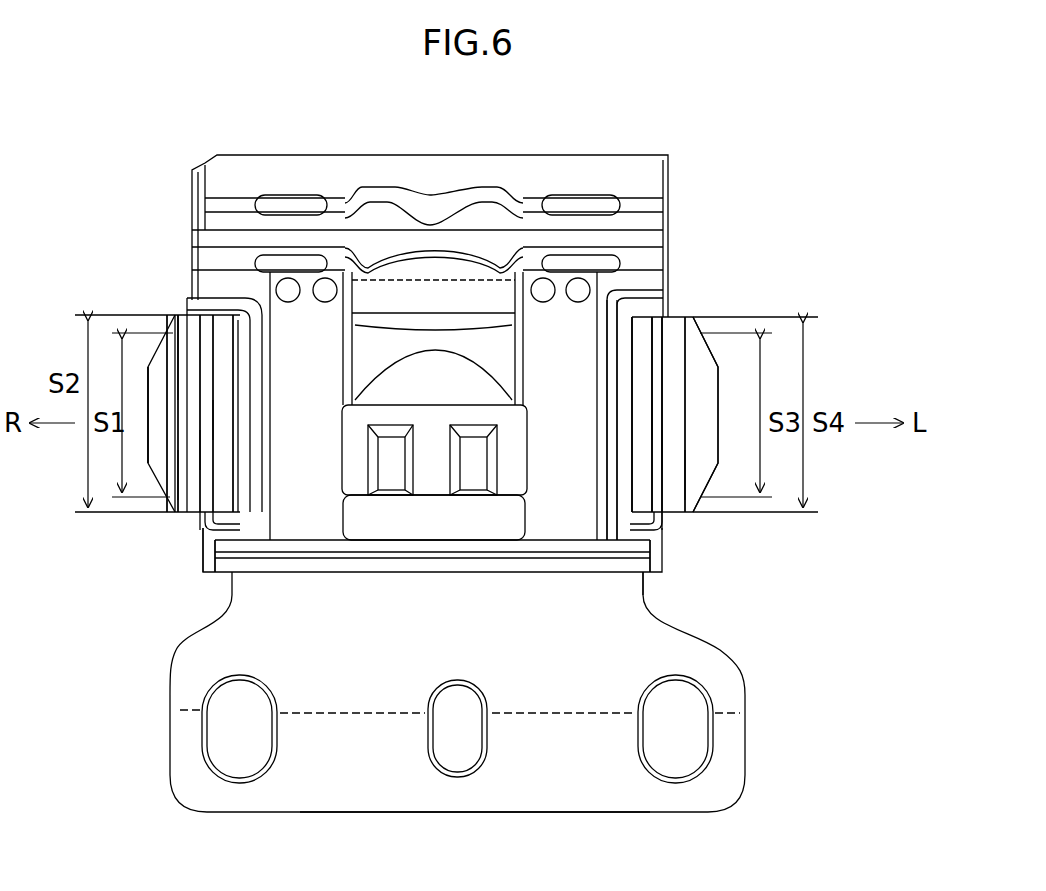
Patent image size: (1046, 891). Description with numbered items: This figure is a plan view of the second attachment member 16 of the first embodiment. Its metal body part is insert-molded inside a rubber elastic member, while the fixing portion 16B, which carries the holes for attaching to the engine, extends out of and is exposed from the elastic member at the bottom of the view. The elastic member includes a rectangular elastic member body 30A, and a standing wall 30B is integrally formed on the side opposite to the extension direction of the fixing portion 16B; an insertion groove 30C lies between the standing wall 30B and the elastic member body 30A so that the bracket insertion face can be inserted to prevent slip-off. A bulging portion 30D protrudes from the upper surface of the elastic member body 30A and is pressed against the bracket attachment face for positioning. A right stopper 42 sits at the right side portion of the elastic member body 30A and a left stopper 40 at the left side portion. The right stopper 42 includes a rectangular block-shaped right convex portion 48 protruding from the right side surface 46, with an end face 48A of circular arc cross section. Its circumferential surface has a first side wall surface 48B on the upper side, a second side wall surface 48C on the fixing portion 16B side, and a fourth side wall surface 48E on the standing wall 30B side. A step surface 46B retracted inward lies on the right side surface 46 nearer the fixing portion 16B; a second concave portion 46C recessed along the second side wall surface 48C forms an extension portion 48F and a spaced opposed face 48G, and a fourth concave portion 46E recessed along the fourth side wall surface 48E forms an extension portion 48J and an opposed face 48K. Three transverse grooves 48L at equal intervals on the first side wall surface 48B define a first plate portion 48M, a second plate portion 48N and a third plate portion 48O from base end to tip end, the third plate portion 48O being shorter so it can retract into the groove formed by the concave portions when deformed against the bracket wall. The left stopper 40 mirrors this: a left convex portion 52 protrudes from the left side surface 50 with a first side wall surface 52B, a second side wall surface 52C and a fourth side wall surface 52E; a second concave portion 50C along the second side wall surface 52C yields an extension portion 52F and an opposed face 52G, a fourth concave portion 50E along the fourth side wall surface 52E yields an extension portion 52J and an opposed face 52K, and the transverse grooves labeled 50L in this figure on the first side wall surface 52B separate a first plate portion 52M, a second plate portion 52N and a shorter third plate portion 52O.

The second attachment member 16 is at (740, 805).
The fixing portion 16B is at (608, 790).
The elastic member body 30A is at (650, 255).
The standing wall 30B is at (526, 157).
The insertion groove 30C is at (567, 240).
The bulging portion 30D is at (418, 515).
The left stopper 40 is at (745, 315).
The right stopper 42 is at (160, 315).
The right side surface 46 is at (188, 300).
The step surface 46B is at (213, 548).
The second concave portion 46C is at (203, 530).
The fourth concave portion 46E is at (168, 316).
The right convex portion 48 is at (170, 518).
The end face 48A is at (147, 398).
The first side wall surface 48B is at (192, 350).
The second side wall surface 48C is at (205, 518).
The fourth side wall surface 48E is at (182, 316).
The extension portion 48F is at (222, 542).
The opposed face 48G is at (245, 540).
The extension portion 48J is at (195, 355).
The opposed face 48K is at (235, 298).
The transverse grooves 48L is at (233, 410).
The first plate portion 48M is at (222, 430).
The second plate portion 48N is at (205, 462).
The third plate portion 48O is at (185, 490).
The left side surface 50 is at (665, 295).
The second concave portion 50C is at (658, 522).
The fourth concave portion 50E is at (665, 312).
The second clamping piece ribs 50L is at (665, 380).
The left convex portion 52 is at (705, 518).
The first side wall surface 52B is at (700, 385).
The second side wall surface 52C is at (690, 518).
The fourth side wall surface 52E is at (700, 315).
The extension portion 52F is at (645, 525).
The opposed face 52G is at (665, 580).
The extension portion 52J is at (634, 300).
The opposed face 52K is at (655, 300).
The first plate portion 52M is at (645, 430).
The second plate portion 52N is at (672, 460).
The third plate portion 52O is at (690, 488).